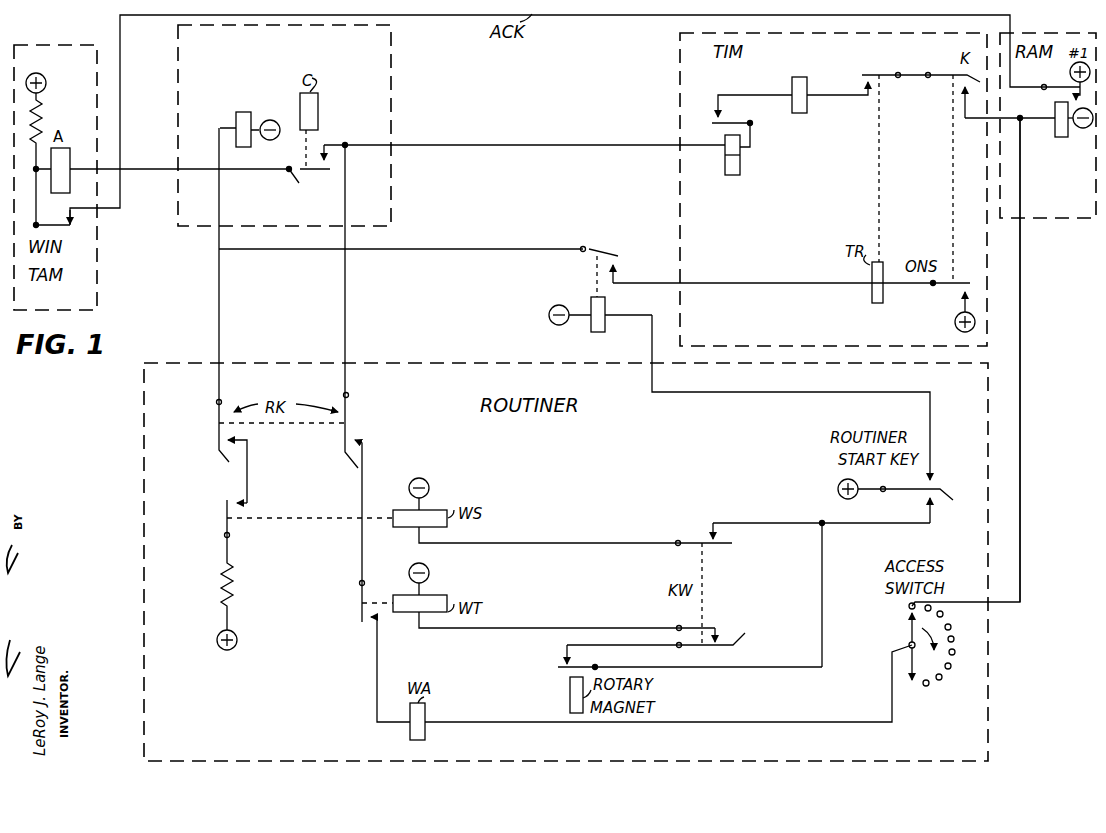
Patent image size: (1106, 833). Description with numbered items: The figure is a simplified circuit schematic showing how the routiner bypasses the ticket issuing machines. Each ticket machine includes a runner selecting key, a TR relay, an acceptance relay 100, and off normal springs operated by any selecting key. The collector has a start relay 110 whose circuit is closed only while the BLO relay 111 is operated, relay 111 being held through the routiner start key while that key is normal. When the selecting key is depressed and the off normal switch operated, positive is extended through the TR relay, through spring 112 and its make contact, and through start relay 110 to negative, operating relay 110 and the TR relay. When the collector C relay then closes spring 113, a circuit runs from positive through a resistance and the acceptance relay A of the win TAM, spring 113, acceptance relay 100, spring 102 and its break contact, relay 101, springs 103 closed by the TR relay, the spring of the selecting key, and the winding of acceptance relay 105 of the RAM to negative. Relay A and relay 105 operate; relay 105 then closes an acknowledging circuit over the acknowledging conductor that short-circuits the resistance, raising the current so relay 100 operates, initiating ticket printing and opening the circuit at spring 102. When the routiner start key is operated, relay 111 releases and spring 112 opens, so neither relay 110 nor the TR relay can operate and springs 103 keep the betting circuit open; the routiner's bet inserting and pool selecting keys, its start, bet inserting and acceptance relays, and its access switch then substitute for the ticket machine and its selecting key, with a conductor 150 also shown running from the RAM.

The acceptance relay 100 is at (735, 172).
The relay 101 is at (808, 70).
The spring 102 is at (732, 122).
The springs 103 is at (885, 72).
The acceptance relay 105 is at (1065, 130).
The start relay 110 is at (255, 96).
The BLO relay 111 is at (603, 328).
The spring 112 is at (611, 236).
The spring 113 is at (298, 176).
The conductor 150 is at (1020, 405).